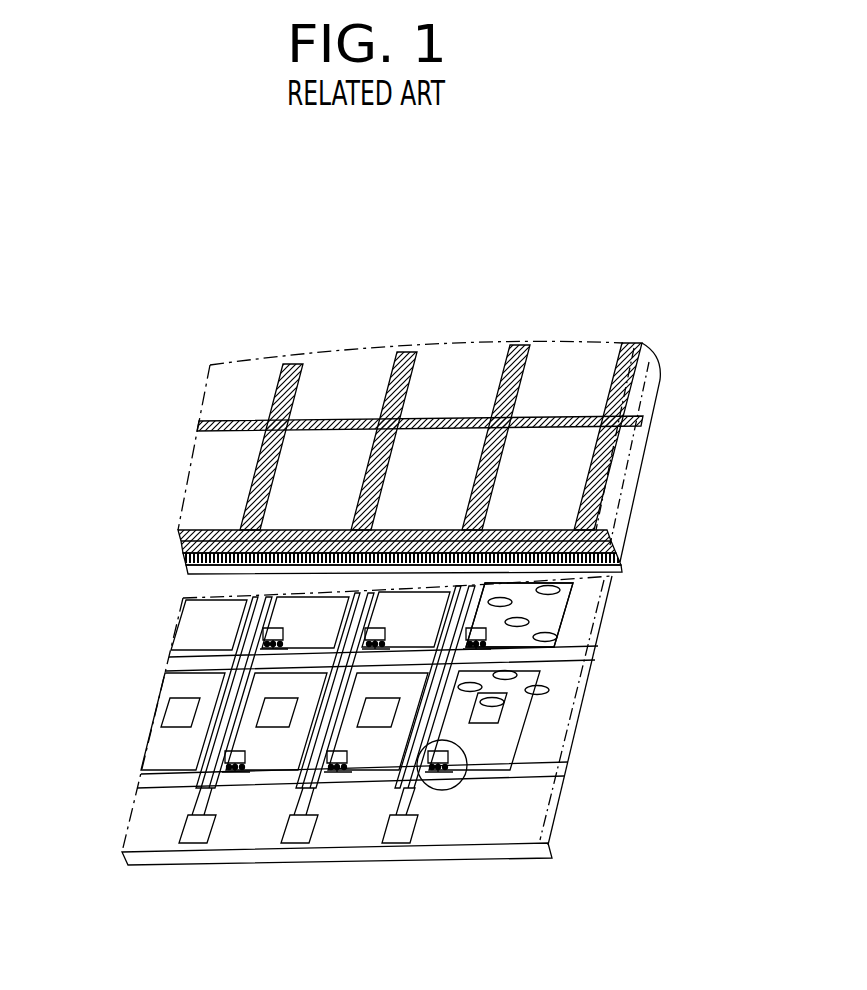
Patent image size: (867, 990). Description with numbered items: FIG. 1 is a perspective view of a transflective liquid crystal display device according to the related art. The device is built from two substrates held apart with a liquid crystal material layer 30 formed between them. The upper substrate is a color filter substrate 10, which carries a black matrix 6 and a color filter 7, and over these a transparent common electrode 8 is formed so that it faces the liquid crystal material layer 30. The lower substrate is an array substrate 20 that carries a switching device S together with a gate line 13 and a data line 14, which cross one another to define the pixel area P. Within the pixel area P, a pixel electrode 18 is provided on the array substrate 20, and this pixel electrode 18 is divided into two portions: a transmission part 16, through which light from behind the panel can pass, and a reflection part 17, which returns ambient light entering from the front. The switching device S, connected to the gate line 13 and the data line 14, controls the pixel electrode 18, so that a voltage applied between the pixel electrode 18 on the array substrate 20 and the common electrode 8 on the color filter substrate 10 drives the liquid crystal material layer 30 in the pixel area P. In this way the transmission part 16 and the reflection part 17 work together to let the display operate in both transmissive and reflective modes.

The color filter layer 6 is at (622, 378).
The black matrix 7 is at (625, 495).
The common electrode 8 is at (603, 565).
The upper color filter substrate 10 is at (395, 472).
The lower array substrate 20 is at (371, 767).
The gate line 13 is at (437, 797).
The data line 14 is at (493, 790).
The drain contact hole 16 is at (508, 720).
The pixel electrode 17 is at (513, 743).
The passivation layer 18 is at (520, 760).
The holes 30 is at (535, 690).
The thin film transistor switching element S is at (443, 792).
The pixel region P is at (588, 668).